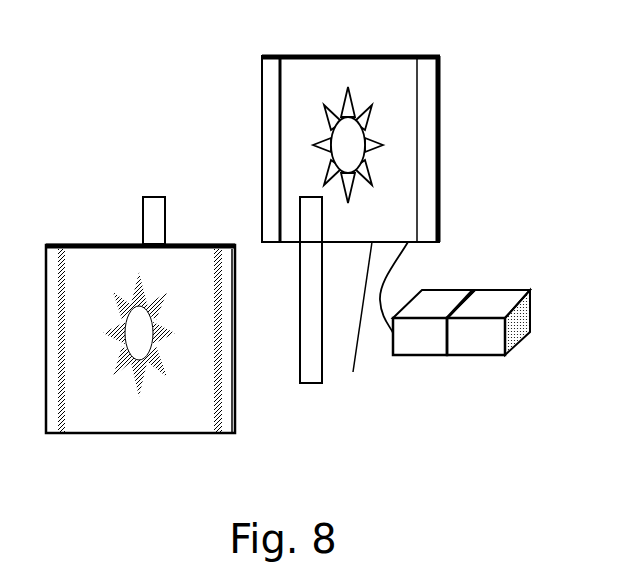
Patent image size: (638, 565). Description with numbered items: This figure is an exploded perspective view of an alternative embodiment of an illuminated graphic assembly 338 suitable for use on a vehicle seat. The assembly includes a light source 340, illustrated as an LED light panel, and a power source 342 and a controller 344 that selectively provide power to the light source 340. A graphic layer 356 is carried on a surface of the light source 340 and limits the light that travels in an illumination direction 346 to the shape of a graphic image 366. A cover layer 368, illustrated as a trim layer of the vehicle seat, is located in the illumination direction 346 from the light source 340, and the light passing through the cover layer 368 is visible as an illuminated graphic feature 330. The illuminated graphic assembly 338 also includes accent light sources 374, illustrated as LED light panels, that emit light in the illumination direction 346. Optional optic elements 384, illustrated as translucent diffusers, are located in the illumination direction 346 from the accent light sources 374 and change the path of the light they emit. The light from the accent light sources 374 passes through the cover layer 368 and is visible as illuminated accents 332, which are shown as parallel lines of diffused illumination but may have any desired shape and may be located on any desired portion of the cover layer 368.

The illumination direction 346 is at (143, 77).
The illuminated graphic assembly 338 is at (486, 64).
The illuminated graphic feature 330 is at (135, 293).
The illuminated accents 332 is at (140, 373).
The cover layer 368 is at (237, 430).
The optic elements 384 is at (165, 215).
The graphic image 366 is at (345, 105).
The graphic layer 356 is at (417, 137).
The accent light sources 374 is at (260, 123).
The light source 340 is at (373, 323).
The controller 344 is at (405, 347).
The power source 342 is at (461, 347).